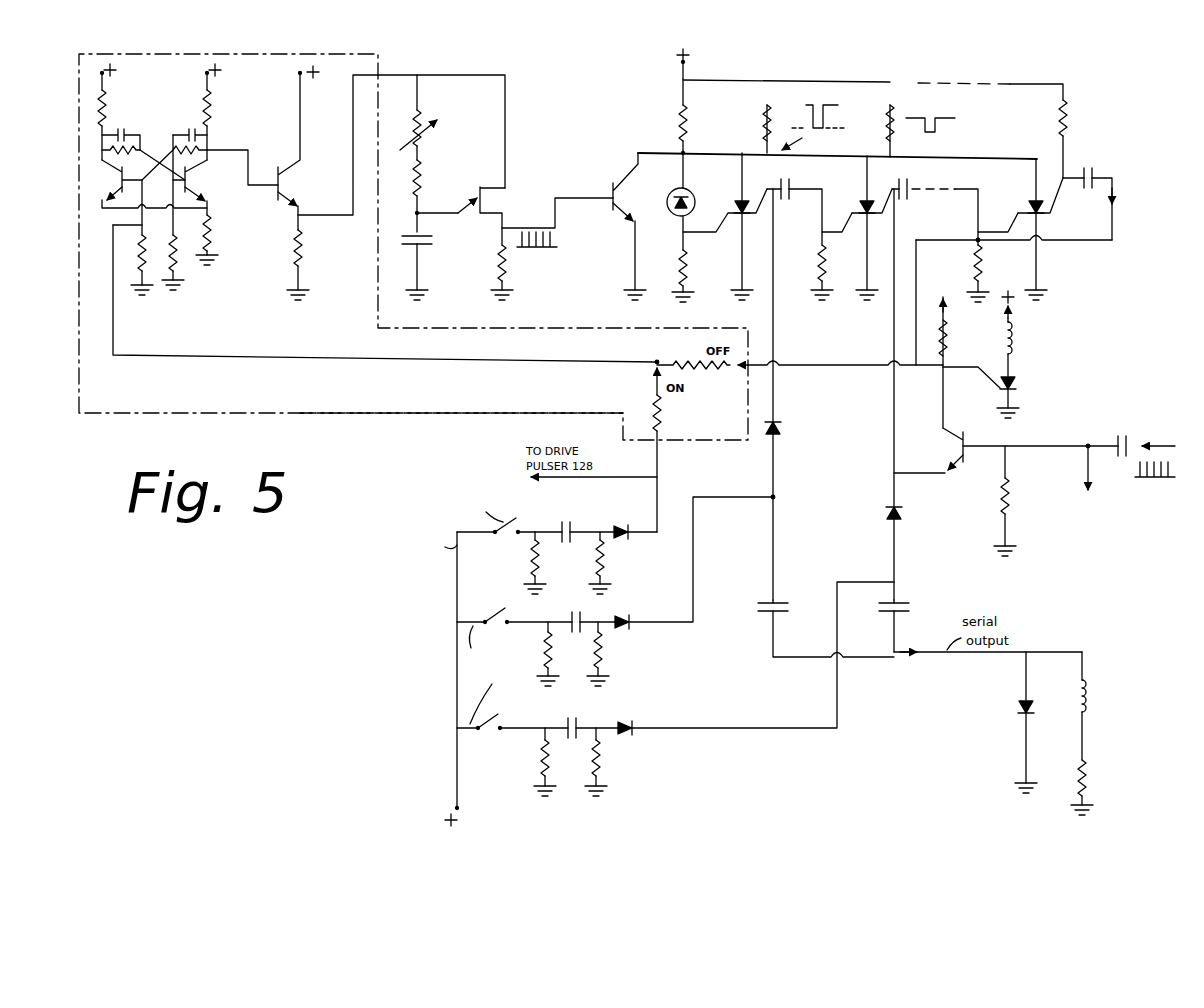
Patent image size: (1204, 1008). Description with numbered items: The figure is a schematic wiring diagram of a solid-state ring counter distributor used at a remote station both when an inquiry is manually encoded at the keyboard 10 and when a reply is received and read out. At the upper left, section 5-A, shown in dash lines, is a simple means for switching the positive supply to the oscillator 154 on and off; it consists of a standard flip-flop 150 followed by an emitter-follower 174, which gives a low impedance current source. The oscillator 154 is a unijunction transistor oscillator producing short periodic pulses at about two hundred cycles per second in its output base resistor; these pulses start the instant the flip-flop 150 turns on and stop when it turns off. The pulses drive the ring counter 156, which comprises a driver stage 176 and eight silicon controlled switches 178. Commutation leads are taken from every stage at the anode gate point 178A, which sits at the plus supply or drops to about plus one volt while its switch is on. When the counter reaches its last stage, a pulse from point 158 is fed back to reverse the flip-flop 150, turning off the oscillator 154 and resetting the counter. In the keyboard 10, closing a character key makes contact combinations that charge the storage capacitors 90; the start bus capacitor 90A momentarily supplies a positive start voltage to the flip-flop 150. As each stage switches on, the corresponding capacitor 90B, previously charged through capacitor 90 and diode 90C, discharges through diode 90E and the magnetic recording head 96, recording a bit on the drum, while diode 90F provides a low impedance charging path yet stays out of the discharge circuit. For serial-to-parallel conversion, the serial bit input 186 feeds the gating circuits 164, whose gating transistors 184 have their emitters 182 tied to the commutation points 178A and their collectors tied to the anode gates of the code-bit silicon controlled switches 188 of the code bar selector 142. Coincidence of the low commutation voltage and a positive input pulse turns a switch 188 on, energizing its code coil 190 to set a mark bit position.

The flip-flop 150 is at (171, 126).
The emitter-follower 174 is at (339, 194).
The oscillator 154 is at (487, 136).
The driver stage 176 is at (621, 169).
The ring counter 156 is at (803, 66).
The silicon controlled switches 178 is at (724, 236).
The anode gate point 178A is at (771, 184).
The last stage point 158 is at (1113, 196).
The code bar selector 142 is at (1076, 361).
The code coils 190 is at (1022, 343).
The code-bit silicon controlled switch 188 is at (1025, 390).
The diode 90E is at (791, 394).
The capacitor 90B is at (774, 604).
The gating circuits 164 is at (960, 513).
The emitter of gating transistor 182 is at (947, 470).
The gating transistors 184 is at (967, 441).
The serial bit input 186 is at (1125, 441).
The keyboard 10 is at (488, 590).
The storage capacitors 90 is at (578, 518).
The start bus capacitor 90A is at (581, 527).
The diode 90C is at (636, 621).
The diode 90F is at (1012, 710).
The magnetic recording head 96 is at (1090, 710).
The section 5-A is at (392, 412).